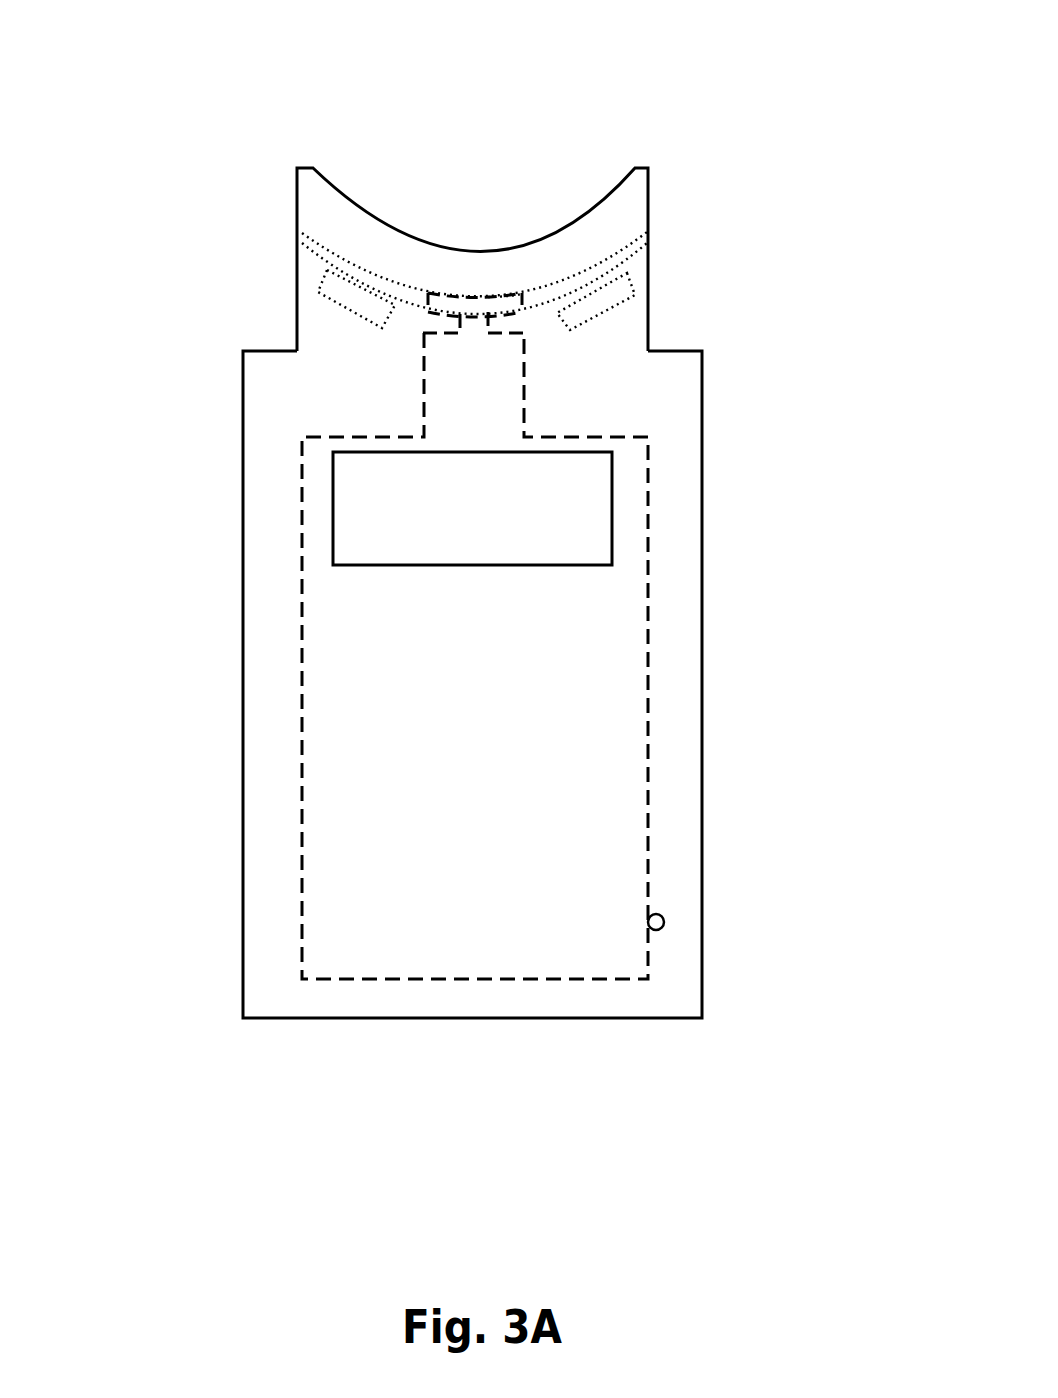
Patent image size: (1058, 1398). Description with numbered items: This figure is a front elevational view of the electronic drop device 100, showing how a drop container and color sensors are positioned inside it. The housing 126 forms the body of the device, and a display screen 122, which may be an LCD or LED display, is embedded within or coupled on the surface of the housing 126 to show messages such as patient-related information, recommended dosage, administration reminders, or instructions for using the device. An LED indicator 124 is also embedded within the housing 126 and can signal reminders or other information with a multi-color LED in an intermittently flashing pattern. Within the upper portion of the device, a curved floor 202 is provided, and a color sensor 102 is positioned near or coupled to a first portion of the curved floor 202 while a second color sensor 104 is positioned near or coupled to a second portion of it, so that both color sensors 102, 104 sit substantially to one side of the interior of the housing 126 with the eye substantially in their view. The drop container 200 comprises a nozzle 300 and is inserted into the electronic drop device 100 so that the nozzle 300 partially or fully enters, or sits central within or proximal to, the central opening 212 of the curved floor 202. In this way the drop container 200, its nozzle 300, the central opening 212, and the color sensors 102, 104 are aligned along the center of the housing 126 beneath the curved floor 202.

The electronic drop device 100 is at (73, 72).
The color sensor 102 is at (635, 293).
The color sensor 104 is at (335, 293).
The display screen 122 is at (585, 500).
The LED indicator 124 is at (660, 923).
The housing 126 is at (678, 660).
The drop container 200 is at (300, 802).
The curved floor 202 is at (615, 255).
The central opening 212 is at (505, 303).
The nozzle 300 is at (472, 303).